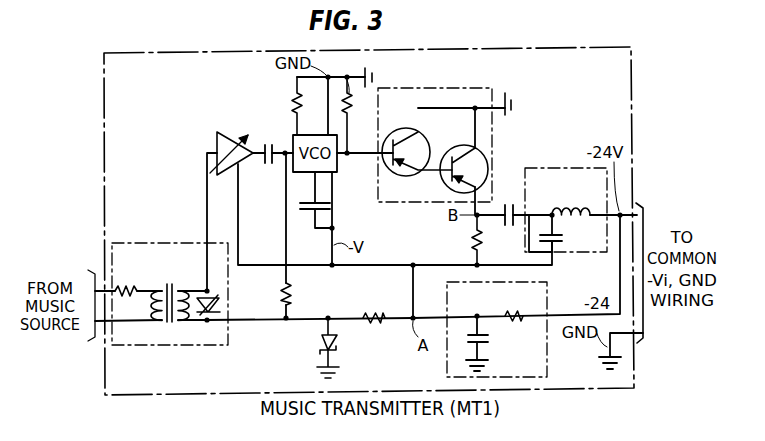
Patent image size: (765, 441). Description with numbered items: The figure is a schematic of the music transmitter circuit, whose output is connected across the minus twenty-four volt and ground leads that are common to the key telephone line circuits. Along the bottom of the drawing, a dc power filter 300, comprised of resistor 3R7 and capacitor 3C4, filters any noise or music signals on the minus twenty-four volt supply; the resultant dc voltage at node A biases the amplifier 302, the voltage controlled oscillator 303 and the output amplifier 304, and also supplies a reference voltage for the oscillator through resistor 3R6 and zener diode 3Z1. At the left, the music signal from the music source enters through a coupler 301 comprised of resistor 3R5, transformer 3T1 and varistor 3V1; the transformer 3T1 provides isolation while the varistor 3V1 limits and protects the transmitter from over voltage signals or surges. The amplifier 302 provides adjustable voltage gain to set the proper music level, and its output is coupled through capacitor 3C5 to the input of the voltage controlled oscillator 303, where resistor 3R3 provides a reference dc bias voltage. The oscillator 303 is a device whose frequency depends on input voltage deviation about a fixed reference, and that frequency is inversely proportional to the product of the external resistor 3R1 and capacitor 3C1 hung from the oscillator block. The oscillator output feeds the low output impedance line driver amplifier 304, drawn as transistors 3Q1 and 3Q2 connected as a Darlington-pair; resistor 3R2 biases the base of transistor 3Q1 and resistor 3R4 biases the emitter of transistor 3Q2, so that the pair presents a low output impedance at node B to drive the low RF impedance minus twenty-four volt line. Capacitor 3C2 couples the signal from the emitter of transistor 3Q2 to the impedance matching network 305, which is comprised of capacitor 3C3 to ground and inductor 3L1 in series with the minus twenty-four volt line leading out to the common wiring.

The dc power filter 300 is at (447, 365).
The coupler 301 is at (145, 243).
The amplifier 302 is at (217, 147).
The voltage controlled oscillator (VCO) 303 is at (338, 172).
The output amplifier 304 is at (450, 88).
The impedance matching network 305 is at (539, 168).
The resistor 3R1 is at (292, 101).
The resistor 3R2 is at (343, 103).
The resistor 3R3 is at (281, 289).
The resistor 3R4 is at (471, 238).
The resistor 3R5 is at (125, 285).
The resistor 3R6 is at (368, 313).
The resistor 3R7 is at (505, 312).
The capacitor 3C1 is at (303, 212).
The capacitor 3C2 is at (510, 204).
The capacitor 3C3 is at (563, 238).
The capacitor 3C4 is at (490, 338).
The capacitor 3C5 is at (268, 165).
The transistor 3Q1 is at (416, 139).
The transistor 3Q2 is at (456, 149).
The inductor 3L1 is at (586, 206).
The transformer 3T1 is at (170, 293).
The varistor 3V1 is at (204, 321).
The zener diode 3Z1 is at (321, 348).